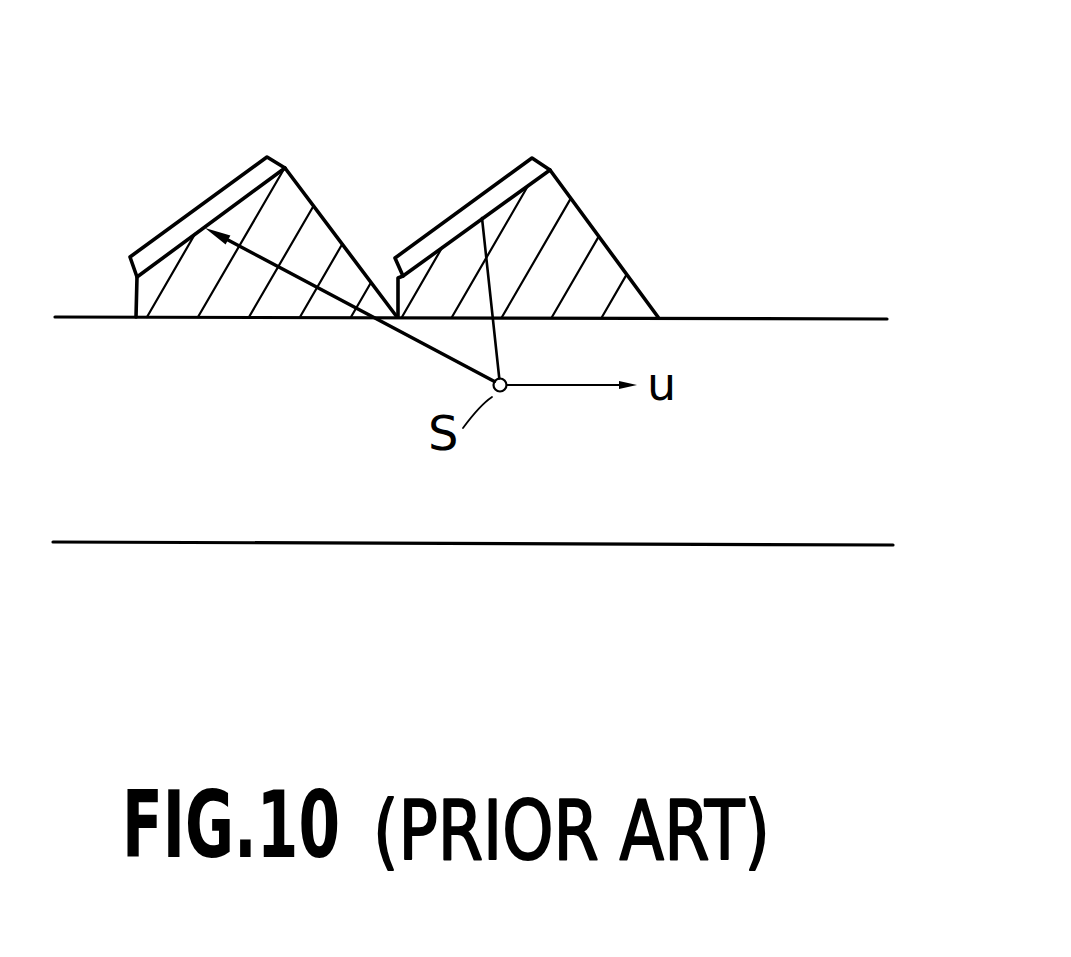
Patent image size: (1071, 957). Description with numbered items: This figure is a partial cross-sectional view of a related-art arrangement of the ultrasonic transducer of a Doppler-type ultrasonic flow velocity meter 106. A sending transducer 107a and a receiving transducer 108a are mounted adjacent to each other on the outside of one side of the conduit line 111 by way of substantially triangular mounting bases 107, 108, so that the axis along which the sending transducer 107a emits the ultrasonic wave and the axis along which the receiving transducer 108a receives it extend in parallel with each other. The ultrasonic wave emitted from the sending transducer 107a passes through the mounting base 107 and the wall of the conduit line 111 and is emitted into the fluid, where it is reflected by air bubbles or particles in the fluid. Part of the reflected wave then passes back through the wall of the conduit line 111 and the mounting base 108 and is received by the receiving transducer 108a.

The ultrasonic flow velocity meter 106 is at (443, 166).
The mounting base 107 is at (610, 268).
The sending transducer 107a is at (472, 207).
The mounting base 108 is at (320, 230).
The receiving transducer 108a is at (192, 214).
The conduit line 111 is at (830, 318).